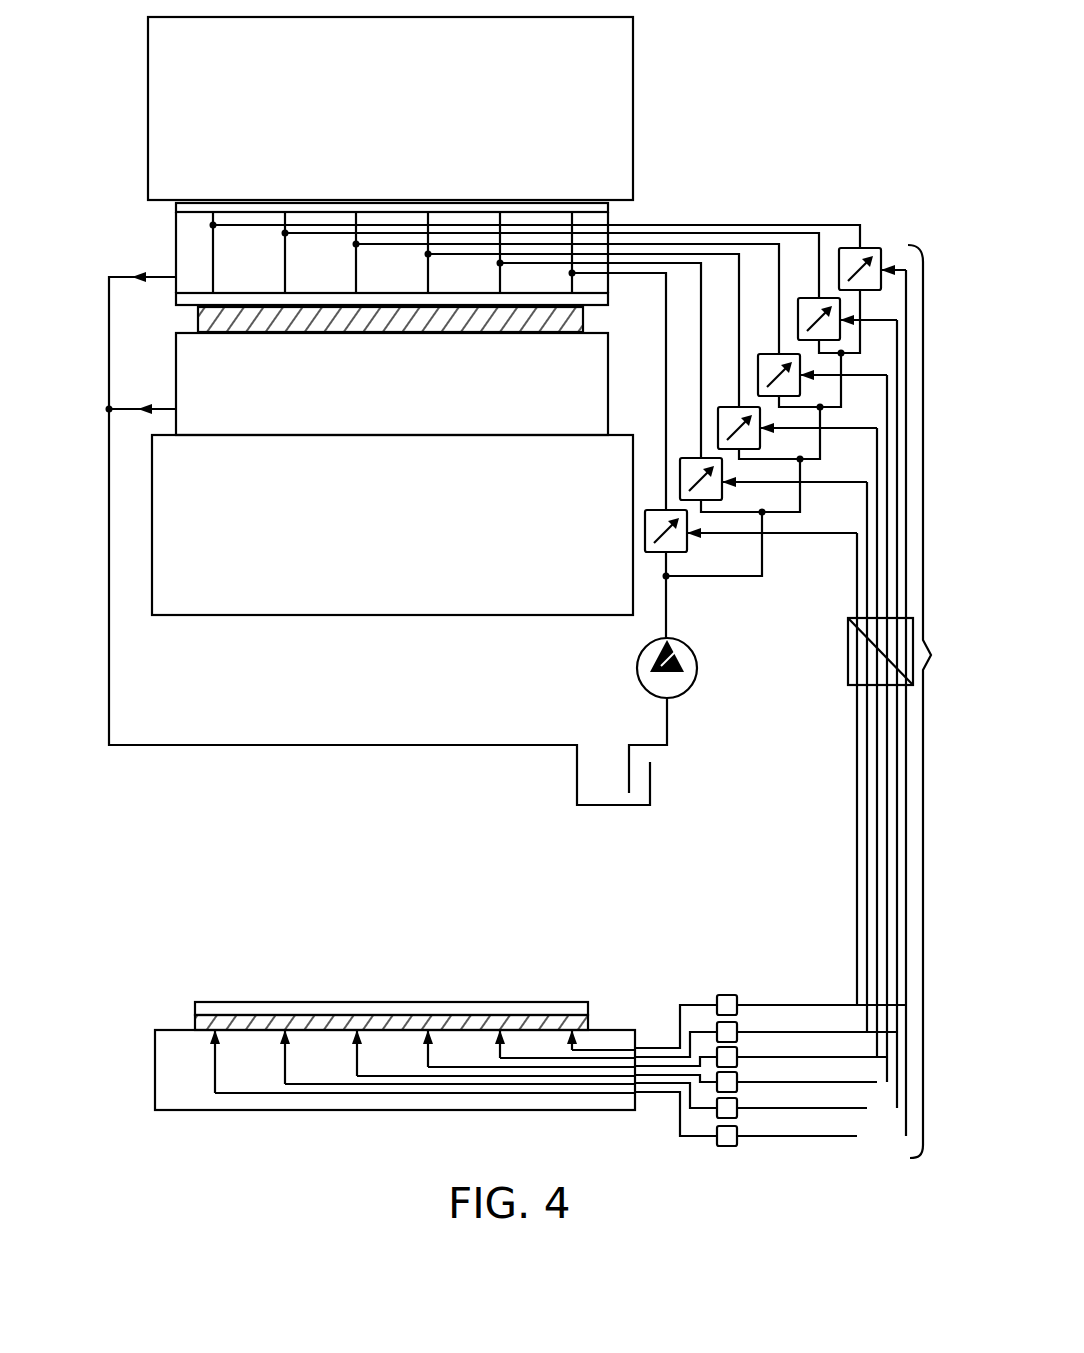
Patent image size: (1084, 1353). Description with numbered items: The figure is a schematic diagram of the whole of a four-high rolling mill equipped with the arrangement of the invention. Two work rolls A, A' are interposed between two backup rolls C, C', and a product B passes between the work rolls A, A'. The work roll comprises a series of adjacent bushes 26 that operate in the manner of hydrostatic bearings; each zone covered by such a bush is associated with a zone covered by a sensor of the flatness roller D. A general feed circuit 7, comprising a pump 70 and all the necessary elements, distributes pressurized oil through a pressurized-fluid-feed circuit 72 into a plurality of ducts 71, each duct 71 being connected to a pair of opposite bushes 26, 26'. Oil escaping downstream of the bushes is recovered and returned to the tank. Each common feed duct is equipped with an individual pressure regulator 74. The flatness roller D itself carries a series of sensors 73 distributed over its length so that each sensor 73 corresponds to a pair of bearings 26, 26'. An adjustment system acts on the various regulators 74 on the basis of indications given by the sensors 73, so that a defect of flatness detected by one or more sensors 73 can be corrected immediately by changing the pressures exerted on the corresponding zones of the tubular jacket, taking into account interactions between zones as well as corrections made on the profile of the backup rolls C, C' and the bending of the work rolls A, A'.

The backup roll C is at (365, 108).
The work roll A is at (353, 250).
The bush 26 is at (392, 177).
The opposite bush 26' is at (392, 338).
The duct 71 is at (430, 218).
The pressurized-fluid-feed circuit 72 is at (690, 240).
The product B is at (198, 322).
The work roll A' is at (366, 384).
The backup roll C' is at (390, 548).
The pump 70 is at (697, 674).
The general feed circuit 7 is at (667, 604).
The pressure regulator 74 is at (770, 354).
The sensor 73 is at (848, 655).
The flatness roller D is at (155, 1065).